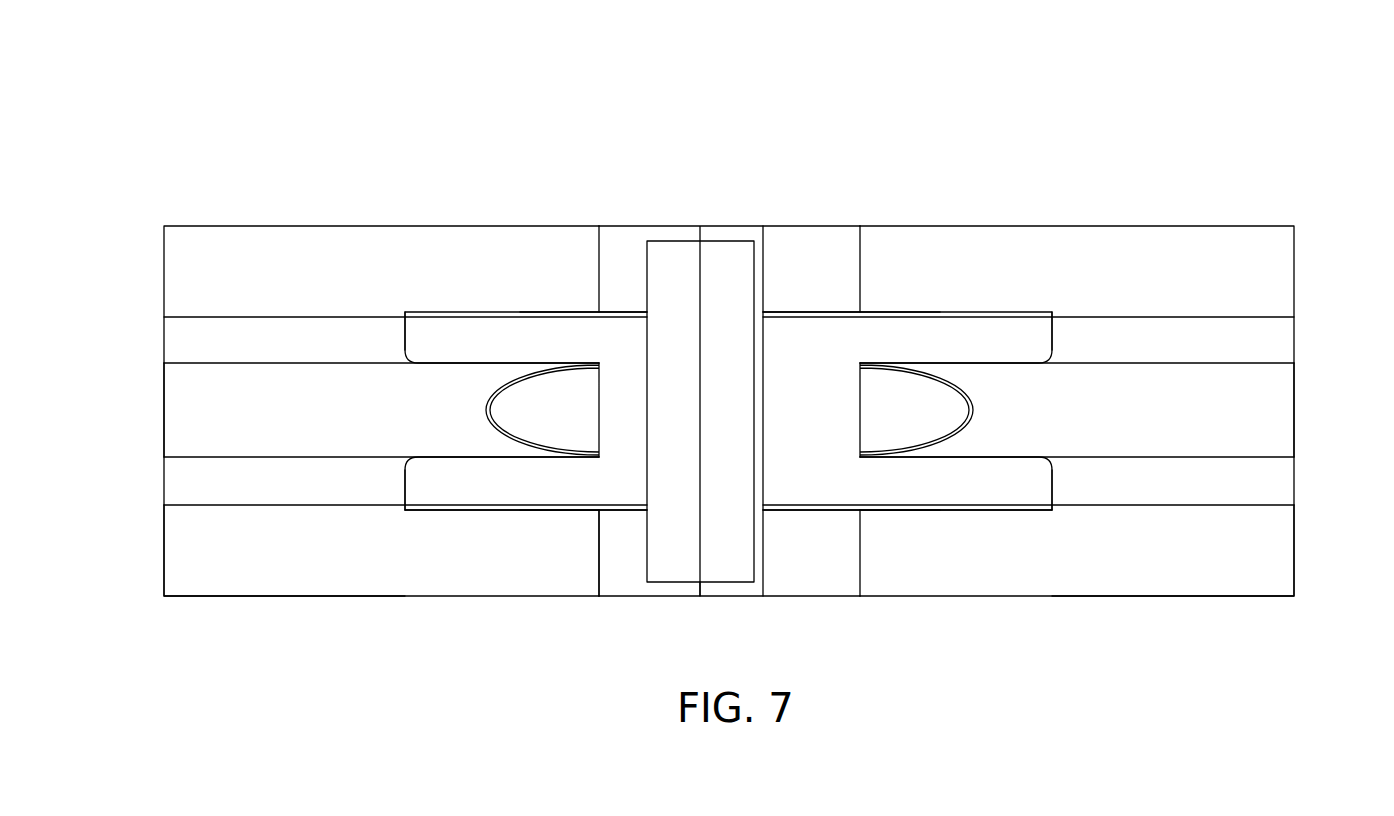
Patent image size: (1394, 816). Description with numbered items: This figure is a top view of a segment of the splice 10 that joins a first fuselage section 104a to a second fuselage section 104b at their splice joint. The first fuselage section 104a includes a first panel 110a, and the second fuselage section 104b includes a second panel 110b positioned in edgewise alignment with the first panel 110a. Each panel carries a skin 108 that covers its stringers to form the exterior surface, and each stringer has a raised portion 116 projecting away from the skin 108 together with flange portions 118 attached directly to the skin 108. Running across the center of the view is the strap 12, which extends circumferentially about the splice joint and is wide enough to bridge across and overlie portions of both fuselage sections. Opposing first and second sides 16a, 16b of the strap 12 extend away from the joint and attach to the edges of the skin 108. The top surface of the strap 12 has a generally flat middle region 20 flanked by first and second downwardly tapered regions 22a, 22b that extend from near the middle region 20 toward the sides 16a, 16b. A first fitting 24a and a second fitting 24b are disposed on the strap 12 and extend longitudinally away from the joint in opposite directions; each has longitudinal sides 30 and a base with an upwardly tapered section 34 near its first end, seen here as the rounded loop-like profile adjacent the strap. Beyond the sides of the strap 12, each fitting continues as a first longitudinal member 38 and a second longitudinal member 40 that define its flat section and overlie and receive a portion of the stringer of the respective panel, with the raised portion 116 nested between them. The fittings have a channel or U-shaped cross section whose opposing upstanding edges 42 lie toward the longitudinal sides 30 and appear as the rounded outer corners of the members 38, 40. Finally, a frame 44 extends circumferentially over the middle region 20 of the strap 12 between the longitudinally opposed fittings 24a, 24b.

The splice 10 is at (1073, 93).
The strap 12 is at (718, 226).
The middle region 20 is at (745, 236).
The first tapered region 22a is at (835, 236).
The second tapered region 22b is at (622, 236).
The first side 16a is at (860, 578).
The second side 16b is at (599, 578).
The first fitting 24a is at (943, 512).
The second fitting 24b is at (515, 512).
The longitudinal sides 30 is at (548, 312).
The tapered section 34 is at (640, 423).
The first longitudinal member 38 is at (495, 340).
The second longitudinal member 40 is at (493, 482).
The upstanding edges 42 is at (432, 312).
The frame 44 is at (667, 572).
The first fuselage section 104a is at (1193, 225).
The second fuselage section 104b is at (265, 223).
The skin 108 is at (182, 279).
The first panel 110a is at (1228, 590).
The second panel 110b is at (230, 590).
The raised portion 116 is at (182, 411).
The flange portions 118 is at (182, 346).